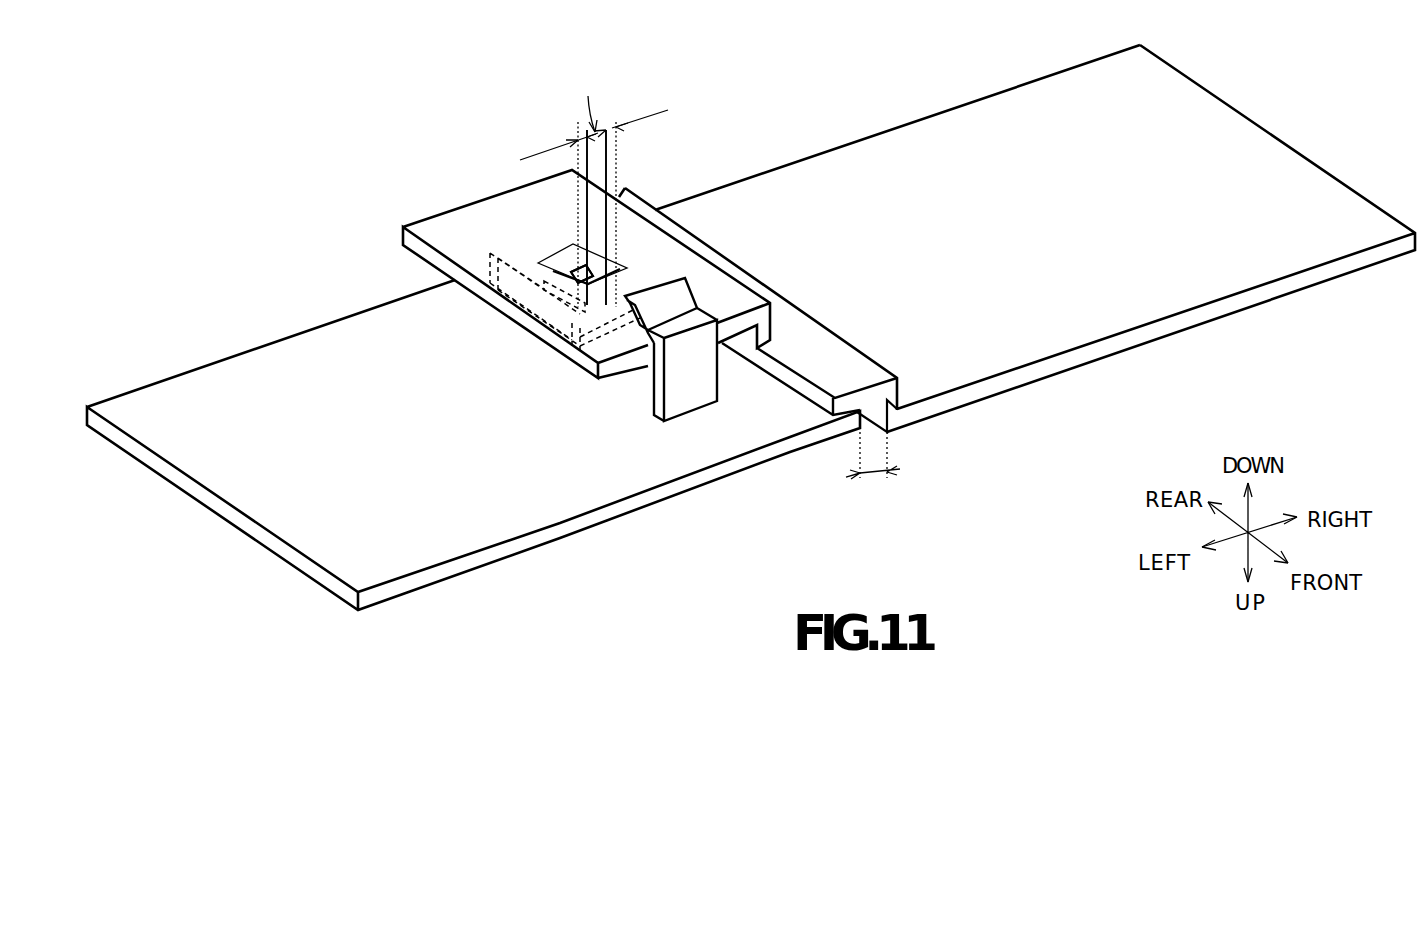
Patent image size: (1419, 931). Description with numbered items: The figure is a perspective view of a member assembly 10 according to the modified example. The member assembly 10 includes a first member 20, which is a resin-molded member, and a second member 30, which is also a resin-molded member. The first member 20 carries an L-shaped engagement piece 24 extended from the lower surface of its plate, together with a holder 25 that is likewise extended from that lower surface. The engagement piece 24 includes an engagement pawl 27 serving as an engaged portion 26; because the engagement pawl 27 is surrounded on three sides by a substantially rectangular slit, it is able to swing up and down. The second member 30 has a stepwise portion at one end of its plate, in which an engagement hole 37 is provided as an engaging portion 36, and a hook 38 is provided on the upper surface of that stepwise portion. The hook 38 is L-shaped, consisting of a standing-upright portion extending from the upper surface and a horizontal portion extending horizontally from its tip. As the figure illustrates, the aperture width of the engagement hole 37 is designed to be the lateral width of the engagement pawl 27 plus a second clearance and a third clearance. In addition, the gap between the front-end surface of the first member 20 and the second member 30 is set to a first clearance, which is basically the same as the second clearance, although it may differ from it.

The member assembly 10 is at (330, 148).
The first member 20 is at (581, 540).
The second member 30 is at (1200, 323).
The engagement piece 24 is at (558, 322).
The holder 25 is at (648, 392).
The engaged portion 26 is at (606, 302).
The engagement pawl 27 is at (662, 217).
The engaging portion 36 is at (552, 262).
The engagement hole 37 is at (525, 252).
The hook 38 is at (507, 298).